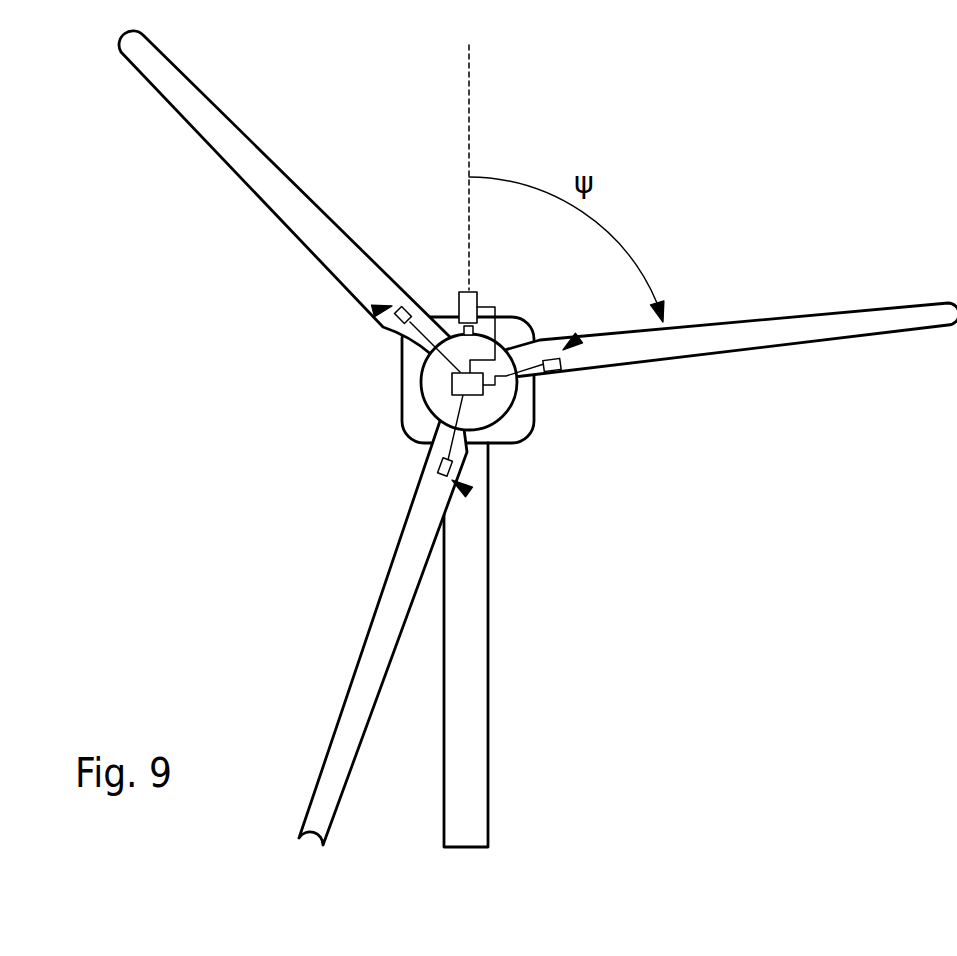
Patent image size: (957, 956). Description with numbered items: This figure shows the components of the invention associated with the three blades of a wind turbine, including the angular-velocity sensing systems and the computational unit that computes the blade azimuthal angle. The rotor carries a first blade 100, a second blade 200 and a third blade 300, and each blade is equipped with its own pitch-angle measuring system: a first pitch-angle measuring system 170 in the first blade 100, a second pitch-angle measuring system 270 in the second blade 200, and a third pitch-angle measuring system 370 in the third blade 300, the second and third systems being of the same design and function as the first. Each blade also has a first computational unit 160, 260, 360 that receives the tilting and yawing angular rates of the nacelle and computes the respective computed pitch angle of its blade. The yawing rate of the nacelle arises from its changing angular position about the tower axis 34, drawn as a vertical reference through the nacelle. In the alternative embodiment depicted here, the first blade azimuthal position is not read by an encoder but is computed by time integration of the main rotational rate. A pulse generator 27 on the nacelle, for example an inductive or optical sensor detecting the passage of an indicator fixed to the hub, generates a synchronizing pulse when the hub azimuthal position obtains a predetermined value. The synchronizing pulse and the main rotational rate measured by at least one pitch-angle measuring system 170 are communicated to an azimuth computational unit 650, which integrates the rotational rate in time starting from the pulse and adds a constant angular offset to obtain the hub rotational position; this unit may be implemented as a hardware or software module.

The pulse generator 27 is at (480, 292).
The tower axis 34 is at (472, 108).
The first blade 100 is at (846, 312).
The first computational unit 160 is at (553, 372).
The first pitch-angle measuring system 170 is at (579, 338).
The second blade 200 is at (213, 102).
The first computational unit of the second blade 260 is at (410, 310).
The second pitch-angle measuring system 270 is at (373, 311).
The third blade 300 is at (330, 740).
The first computational unit of the third blade 360 is at (439, 462).
The third pitch-angle measuring system 370 is at (469, 492).
The azimuth computational unit 650 is at (452, 388).